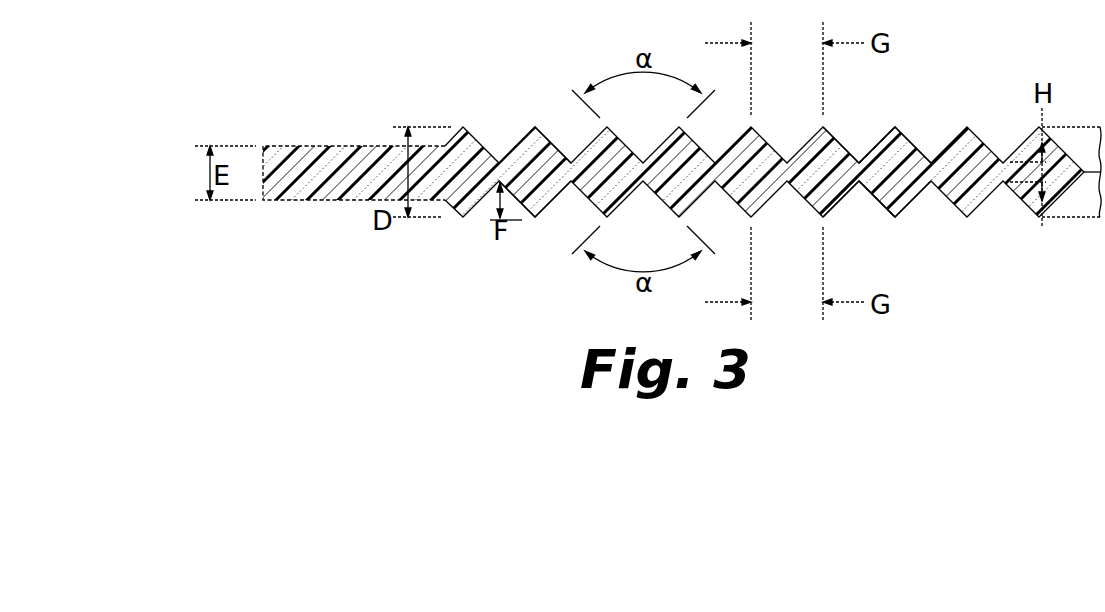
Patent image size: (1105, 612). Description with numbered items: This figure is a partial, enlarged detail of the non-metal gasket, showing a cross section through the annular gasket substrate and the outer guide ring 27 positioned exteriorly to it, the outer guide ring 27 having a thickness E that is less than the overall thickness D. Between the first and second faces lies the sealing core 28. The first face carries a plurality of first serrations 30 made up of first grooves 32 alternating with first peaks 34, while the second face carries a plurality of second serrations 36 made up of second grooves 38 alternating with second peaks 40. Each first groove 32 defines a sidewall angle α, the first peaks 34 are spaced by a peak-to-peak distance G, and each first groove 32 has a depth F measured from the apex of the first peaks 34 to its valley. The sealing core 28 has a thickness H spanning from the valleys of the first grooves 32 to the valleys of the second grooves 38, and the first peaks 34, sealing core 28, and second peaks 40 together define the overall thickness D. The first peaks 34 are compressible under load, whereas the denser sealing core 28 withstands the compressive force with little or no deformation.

The outer guide ring 27 is at (287, 157).
The sealing core 28 is at (957, 165).
The plurality of first serrations 30 is at (535, 127).
The plurality of second serrations 36 is at (535, 217).
The plurality of first grooves 32 is at (859, 162).
The plurality of second grooves 38 is at (859, 182).
The plurality of first peaks 34 is at (896, 126).
The plurality of second peaks 40 is at (896, 219).